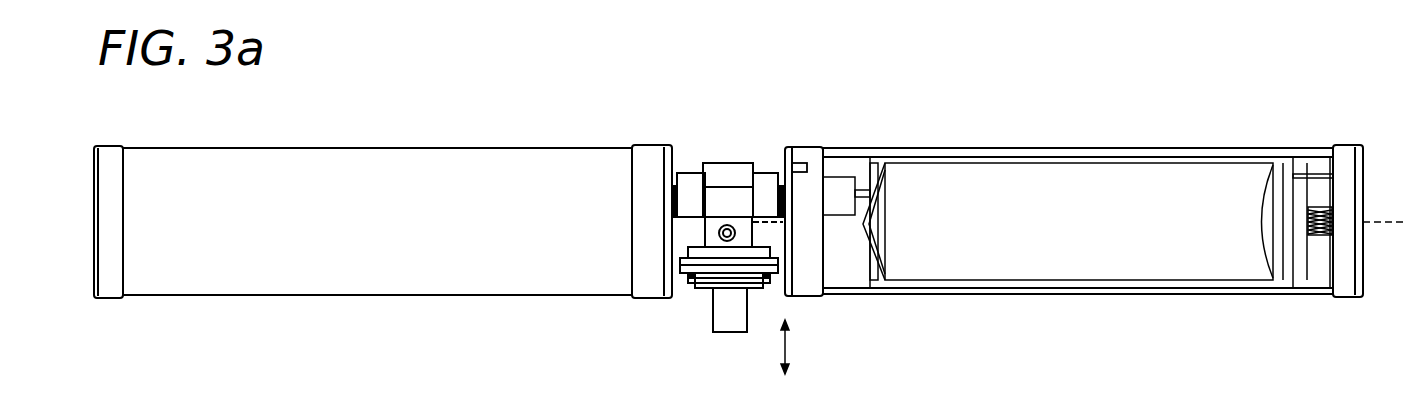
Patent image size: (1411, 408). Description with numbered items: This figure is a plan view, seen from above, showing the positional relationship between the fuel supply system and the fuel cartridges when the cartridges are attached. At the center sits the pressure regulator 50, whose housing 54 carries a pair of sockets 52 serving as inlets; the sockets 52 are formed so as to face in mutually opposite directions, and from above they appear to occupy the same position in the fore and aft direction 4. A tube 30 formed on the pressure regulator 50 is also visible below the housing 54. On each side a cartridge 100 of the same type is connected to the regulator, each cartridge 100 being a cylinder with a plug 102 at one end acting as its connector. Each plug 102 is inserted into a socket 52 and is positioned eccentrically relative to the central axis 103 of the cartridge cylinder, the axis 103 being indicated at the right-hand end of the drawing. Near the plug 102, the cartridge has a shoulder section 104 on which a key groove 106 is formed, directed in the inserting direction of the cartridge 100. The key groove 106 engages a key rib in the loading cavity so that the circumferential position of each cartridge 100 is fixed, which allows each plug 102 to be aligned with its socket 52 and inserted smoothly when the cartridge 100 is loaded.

The cartridge 100 is at (503, 148).
The plug 102 is at (668, 188).
The shoulder section 104 is at (808, 296).
The key groove 106 is at (797, 168).
The socket 52 is at (692, 178).
The housing 54 is at (727, 163).
The pressure regulator 50 is at (743, 156).
The tube 30 is at (735, 240).
The fore and aft direction 4 is at (785, 340).
The axis 103 is at (1380, 222).